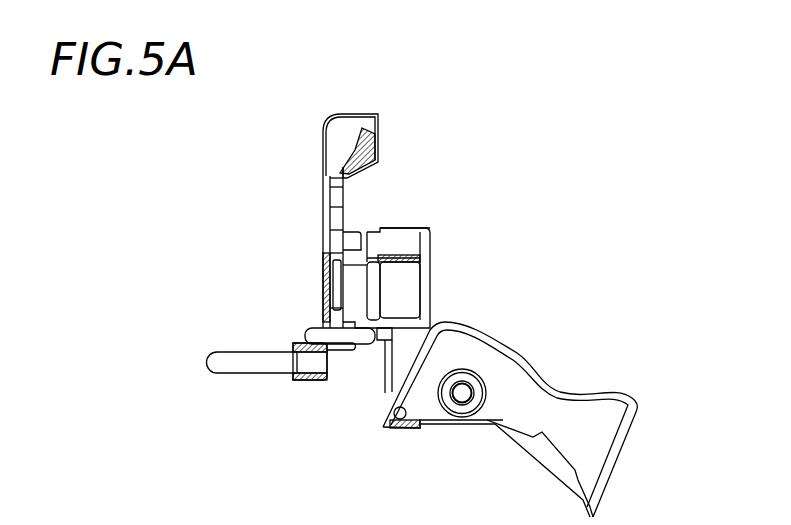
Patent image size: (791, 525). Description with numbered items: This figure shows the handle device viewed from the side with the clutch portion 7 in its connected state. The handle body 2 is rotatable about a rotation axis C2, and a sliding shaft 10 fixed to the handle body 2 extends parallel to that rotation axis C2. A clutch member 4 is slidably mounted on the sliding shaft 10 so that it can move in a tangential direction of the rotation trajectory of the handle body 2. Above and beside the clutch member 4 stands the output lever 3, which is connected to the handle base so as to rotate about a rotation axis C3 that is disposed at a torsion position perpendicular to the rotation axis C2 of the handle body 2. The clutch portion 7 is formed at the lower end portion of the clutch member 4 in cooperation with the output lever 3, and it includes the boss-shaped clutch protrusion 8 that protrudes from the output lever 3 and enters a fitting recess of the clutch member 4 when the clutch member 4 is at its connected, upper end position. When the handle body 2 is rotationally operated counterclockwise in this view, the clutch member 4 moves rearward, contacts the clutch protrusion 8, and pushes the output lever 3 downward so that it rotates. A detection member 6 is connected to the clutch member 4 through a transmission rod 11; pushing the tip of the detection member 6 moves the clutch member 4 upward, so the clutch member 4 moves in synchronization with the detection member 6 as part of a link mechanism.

The handle body 2 is at (612, 438).
The output lever 3 is at (365, 131).
The clutch member 4 is at (410, 292).
The detection member 6 is at (238, 362).
The clutch portion 7 is at (416, 224).
The clutch protrusion 8 is at (407, 248).
The sliding shaft 10 is at (393, 430).
The transmission rod 11 is at (363, 348).
The rotation axis C2 is at (461, 395).
The rotation axis C3 is at (323, 232).